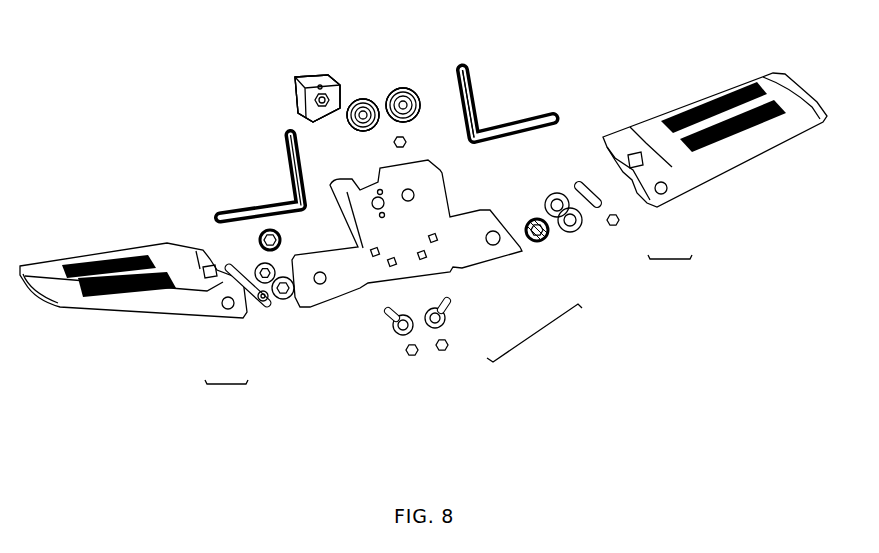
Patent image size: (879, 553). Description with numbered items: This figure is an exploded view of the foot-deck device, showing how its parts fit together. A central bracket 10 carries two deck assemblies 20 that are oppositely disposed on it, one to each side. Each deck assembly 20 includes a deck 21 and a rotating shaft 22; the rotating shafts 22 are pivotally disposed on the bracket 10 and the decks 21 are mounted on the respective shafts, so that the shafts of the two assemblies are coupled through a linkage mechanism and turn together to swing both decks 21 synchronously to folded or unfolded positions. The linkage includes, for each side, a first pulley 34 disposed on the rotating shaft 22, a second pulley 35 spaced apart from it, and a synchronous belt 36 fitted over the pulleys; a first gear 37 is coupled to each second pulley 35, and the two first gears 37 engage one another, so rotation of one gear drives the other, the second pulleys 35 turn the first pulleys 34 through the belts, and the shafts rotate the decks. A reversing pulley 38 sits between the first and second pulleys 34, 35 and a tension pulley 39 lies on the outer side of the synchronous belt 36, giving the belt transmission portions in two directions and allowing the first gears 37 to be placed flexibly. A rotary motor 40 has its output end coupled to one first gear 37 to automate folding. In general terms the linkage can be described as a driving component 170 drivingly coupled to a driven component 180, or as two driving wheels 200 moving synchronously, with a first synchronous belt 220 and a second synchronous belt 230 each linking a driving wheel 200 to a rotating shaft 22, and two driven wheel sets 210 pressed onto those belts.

The bracket 10 is at (350, 293).
The deck assembly 20 is at (448, 329).
The deck 21 is at (177, 312).
The rotating shaft 22 is at (600, 207).
The first pulley 34 is at (282, 237).
The second pulley 35 is at (362, 100).
The synchronous belt 36 is at (266, 196).
The first gear 37 is at (402, 89).
The reversing pulley 38 is at (397, 337).
The tension pulley 39 is at (388, 323).
The rotary motor 40 is at (305, 86).
The driving component 170 is at (255, 60).
The driven component 180 is at (340, 60).
The driving wheel 200 is at (303, 32).
The driven wheel set 210 is at (538, 332).
The first synchronous belt 220 is at (208, 148).
The second synchronous belt 230 is at (528, 53).